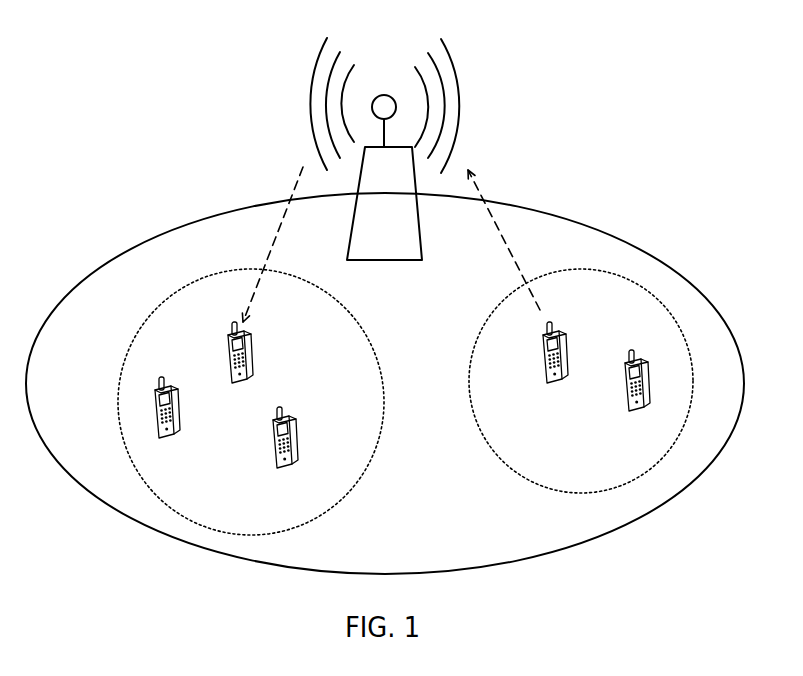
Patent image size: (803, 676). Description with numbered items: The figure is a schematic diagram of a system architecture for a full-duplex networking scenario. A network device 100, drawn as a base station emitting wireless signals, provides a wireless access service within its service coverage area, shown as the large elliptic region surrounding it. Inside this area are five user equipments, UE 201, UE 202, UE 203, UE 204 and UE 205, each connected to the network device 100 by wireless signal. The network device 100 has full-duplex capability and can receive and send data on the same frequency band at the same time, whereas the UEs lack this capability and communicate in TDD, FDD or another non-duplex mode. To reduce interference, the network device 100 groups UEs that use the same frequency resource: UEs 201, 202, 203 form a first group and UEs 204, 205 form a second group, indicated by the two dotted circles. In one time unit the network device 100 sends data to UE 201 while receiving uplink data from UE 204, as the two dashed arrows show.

The network device 100 is at (467, 83).
The UE 201 is at (263, 362).
The UE 202 is at (187, 435).
The UE 203 is at (307, 445).
The UE 204 is at (543, 385).
The UE 205 is at (630, 413).